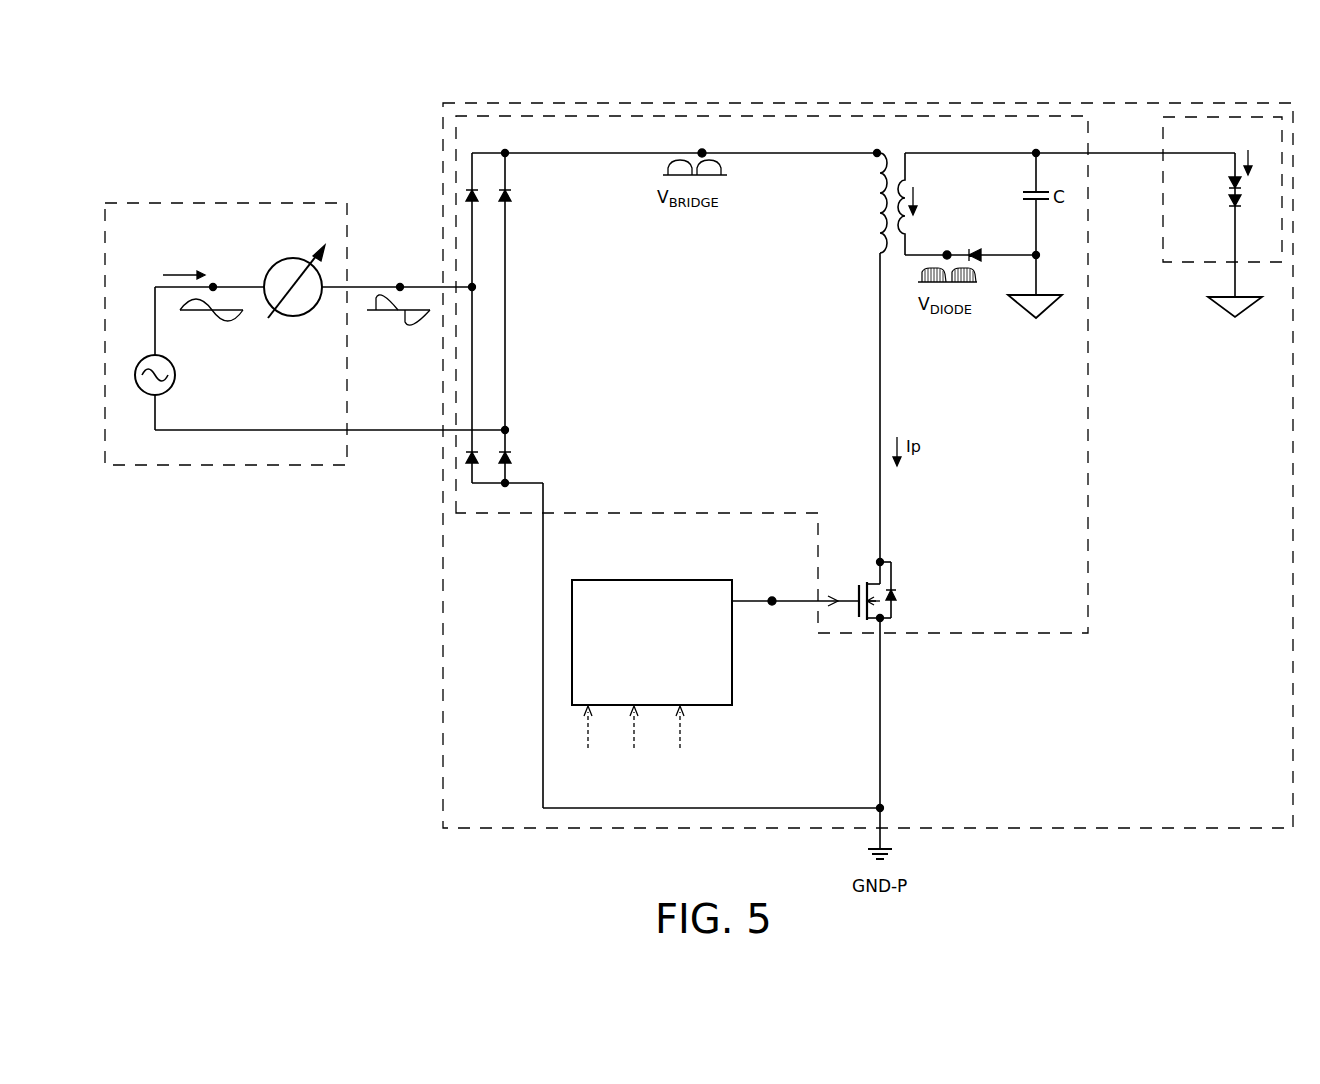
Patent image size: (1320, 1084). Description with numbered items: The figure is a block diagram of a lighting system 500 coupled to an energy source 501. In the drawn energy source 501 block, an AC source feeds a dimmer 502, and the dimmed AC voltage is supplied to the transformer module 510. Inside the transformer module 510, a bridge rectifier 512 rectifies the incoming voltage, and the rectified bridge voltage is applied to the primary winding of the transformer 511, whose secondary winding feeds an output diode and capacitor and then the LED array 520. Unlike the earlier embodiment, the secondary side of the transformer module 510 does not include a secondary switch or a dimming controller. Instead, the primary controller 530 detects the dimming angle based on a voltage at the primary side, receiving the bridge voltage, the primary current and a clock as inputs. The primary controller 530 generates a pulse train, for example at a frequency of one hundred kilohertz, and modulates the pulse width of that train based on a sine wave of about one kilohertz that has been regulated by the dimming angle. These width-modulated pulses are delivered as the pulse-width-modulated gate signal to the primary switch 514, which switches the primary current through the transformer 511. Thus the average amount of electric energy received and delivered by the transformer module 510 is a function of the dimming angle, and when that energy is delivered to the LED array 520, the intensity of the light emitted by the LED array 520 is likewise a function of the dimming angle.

The lighting system 500 is at (1264, 103).
The energy source 501 is at (322, 203).
The dimmer (triac) 502 is at (293, 316).
The transformer module 510 is at (1092, 253).
The transformer 511 is at (897, 162).
The bridge rectifier 512 is at (488, 264).
The primary switch 514 is at (878, 585).
The LED array 520 is at (1163, 138).
The primary controller 530 is at (607, 580).